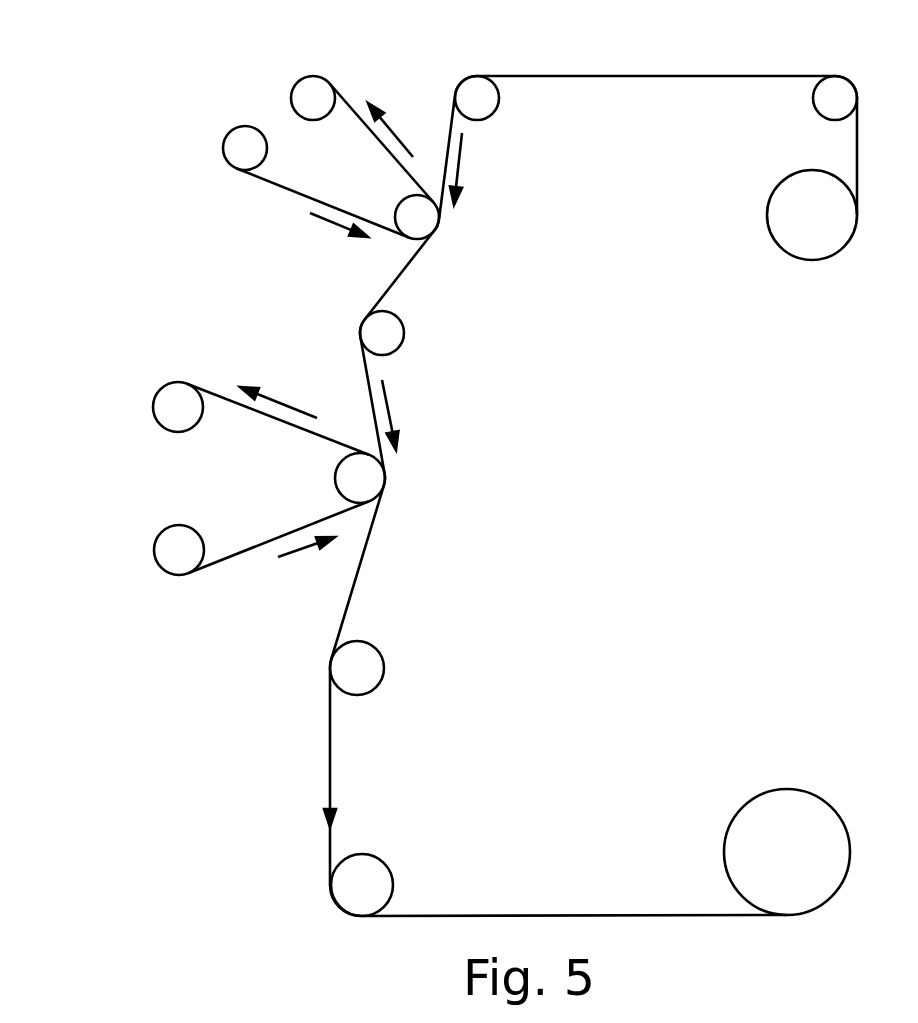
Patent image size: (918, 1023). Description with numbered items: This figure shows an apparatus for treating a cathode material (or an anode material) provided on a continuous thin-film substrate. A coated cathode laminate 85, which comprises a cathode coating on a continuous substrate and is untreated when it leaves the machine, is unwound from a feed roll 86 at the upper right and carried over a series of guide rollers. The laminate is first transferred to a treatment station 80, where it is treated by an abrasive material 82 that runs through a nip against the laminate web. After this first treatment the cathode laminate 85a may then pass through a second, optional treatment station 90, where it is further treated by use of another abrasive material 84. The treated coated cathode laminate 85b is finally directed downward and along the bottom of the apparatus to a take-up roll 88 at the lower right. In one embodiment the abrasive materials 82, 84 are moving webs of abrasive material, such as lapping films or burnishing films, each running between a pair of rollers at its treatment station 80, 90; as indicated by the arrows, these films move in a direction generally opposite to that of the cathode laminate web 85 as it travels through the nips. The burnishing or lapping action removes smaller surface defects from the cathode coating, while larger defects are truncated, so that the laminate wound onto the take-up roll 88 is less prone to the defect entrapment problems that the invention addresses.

The treatment station 80 is at (200, 180).
The abrasive material 82 is at (290, 193).
The abrasive material 84 is at (240, 553).
The coated cathode laminate 85 is at (783, 73).
The cathode laminate 85a is at (407, 270).
The treated coated cathode laminate 85b is at (355, 582).
The feed roll 86 is at (827, 238).
The take-up roll 88 is at (793, 812).
The second treatment station 90 is at (126, 575).